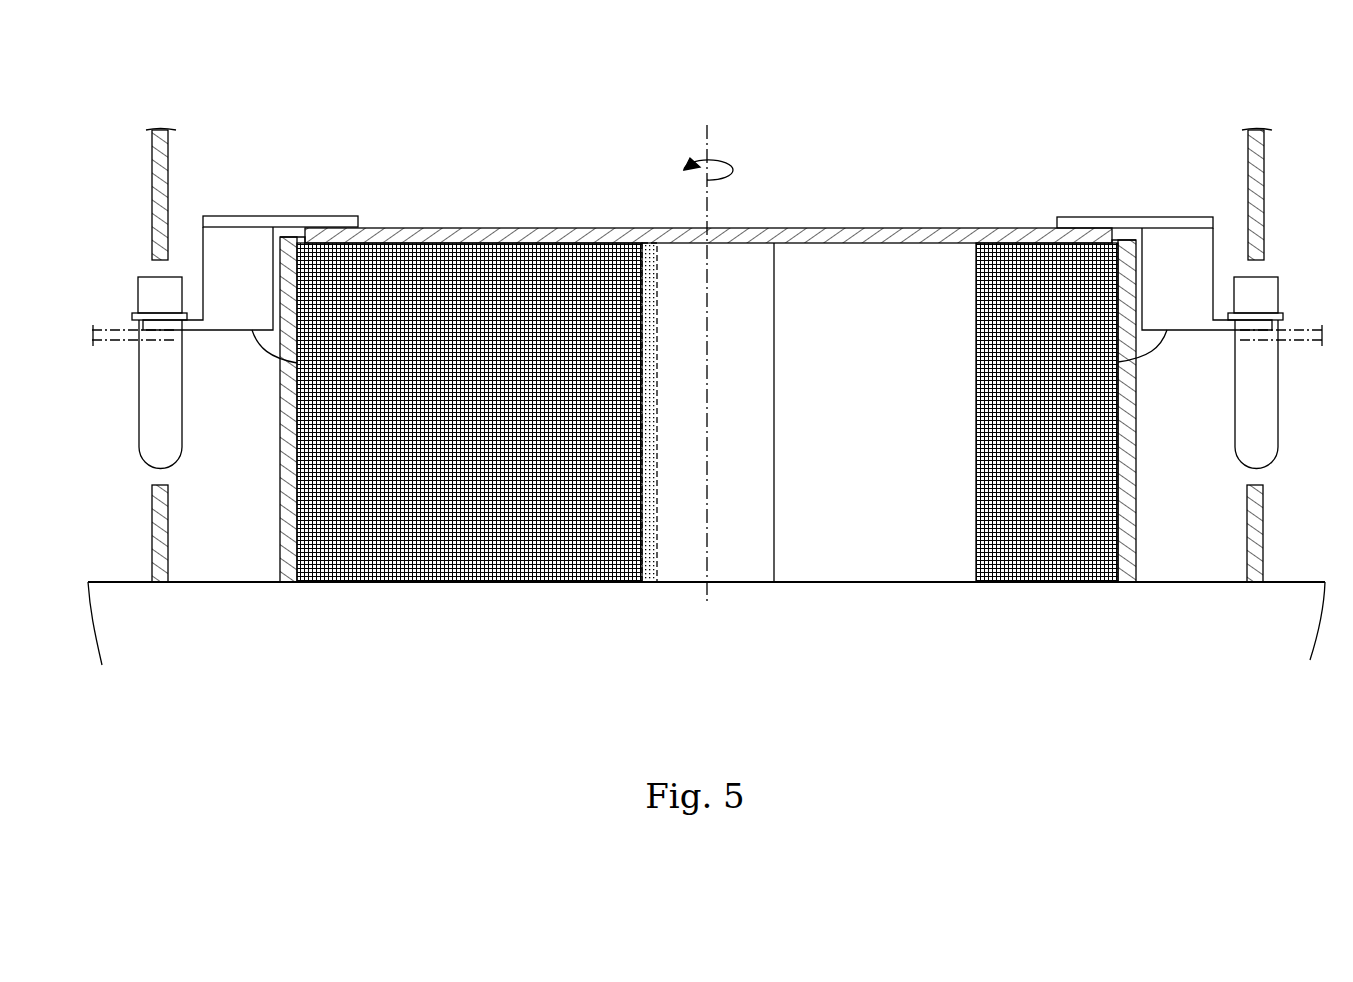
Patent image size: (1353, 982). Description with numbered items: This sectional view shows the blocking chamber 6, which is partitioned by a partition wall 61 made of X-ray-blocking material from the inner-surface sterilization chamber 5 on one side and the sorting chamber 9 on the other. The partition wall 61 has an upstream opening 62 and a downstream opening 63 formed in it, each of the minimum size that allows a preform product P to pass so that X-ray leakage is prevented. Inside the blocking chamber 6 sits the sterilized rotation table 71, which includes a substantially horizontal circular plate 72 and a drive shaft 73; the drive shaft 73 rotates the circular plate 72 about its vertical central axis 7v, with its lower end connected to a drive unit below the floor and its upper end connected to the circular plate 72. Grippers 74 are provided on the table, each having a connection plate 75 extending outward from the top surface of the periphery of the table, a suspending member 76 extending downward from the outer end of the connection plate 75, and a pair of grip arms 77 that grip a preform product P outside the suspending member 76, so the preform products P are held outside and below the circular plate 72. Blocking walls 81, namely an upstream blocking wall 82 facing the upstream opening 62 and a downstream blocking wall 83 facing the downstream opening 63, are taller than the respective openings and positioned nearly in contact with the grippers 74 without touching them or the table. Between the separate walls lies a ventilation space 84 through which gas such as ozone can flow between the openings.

The inner-surface sterilization chamber 5 is at (1320, 97).
The blocking chamber 6 is at (619, 97).
The sorting chamber 9 is at (82, 97).
The vertical axis 7v is at (710, 140).
The partition wall 61 is at (160, 184).
The upstream opening 62 is at (1265, 268).
The downstream opening 63 is at (150, 268).
The preform product P is at (155, 407).
The sterilized rotation table 71 is at (843, 180).
The circular plate 72 is at (925, 228).
The drive shaft 73 is at (760, 460).
The gripper 74 is at (385, 141).
The connection plate 75 is at (240, 215).
The suspending member 76 is at (257, 243).
The grip arm 77 is at (297, 363).
The blocking wall 81 is at (708, 488).
The upstream blocking wall 82 is at (1030, 570).
The downstream blocking wall 83 is at (603, 582).
The ventilation space 84 is at (862, 392).